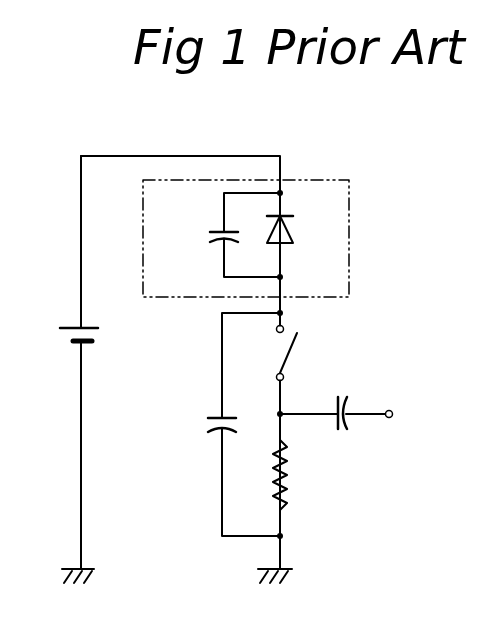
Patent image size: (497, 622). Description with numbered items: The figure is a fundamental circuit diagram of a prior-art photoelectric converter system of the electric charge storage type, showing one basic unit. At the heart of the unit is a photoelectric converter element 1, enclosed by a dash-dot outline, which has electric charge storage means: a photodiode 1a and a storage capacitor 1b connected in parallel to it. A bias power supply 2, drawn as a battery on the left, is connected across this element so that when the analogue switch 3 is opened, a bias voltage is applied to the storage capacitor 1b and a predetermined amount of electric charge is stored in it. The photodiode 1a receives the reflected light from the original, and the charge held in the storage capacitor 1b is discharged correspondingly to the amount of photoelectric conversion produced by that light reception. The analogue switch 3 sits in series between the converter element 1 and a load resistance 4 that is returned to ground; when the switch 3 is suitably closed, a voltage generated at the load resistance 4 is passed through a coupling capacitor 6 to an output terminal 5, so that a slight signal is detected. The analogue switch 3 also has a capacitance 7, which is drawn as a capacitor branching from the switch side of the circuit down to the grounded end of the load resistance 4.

The photoelectric converter element 1 is at (349, 289).
The photodiode 1a is at (293, 233).
The storage capacitor 1b is at (216, 241).
The bias power supply 2 is at (77, 346).
The analogue switch 3 is at (288, 351).
The load resistance 4 is at (285, 472).
The output terminal 5 is at (389, 418).
The coupling capacitor 6 is at (346, 404).
The capacitance 7 is at (216, 431).